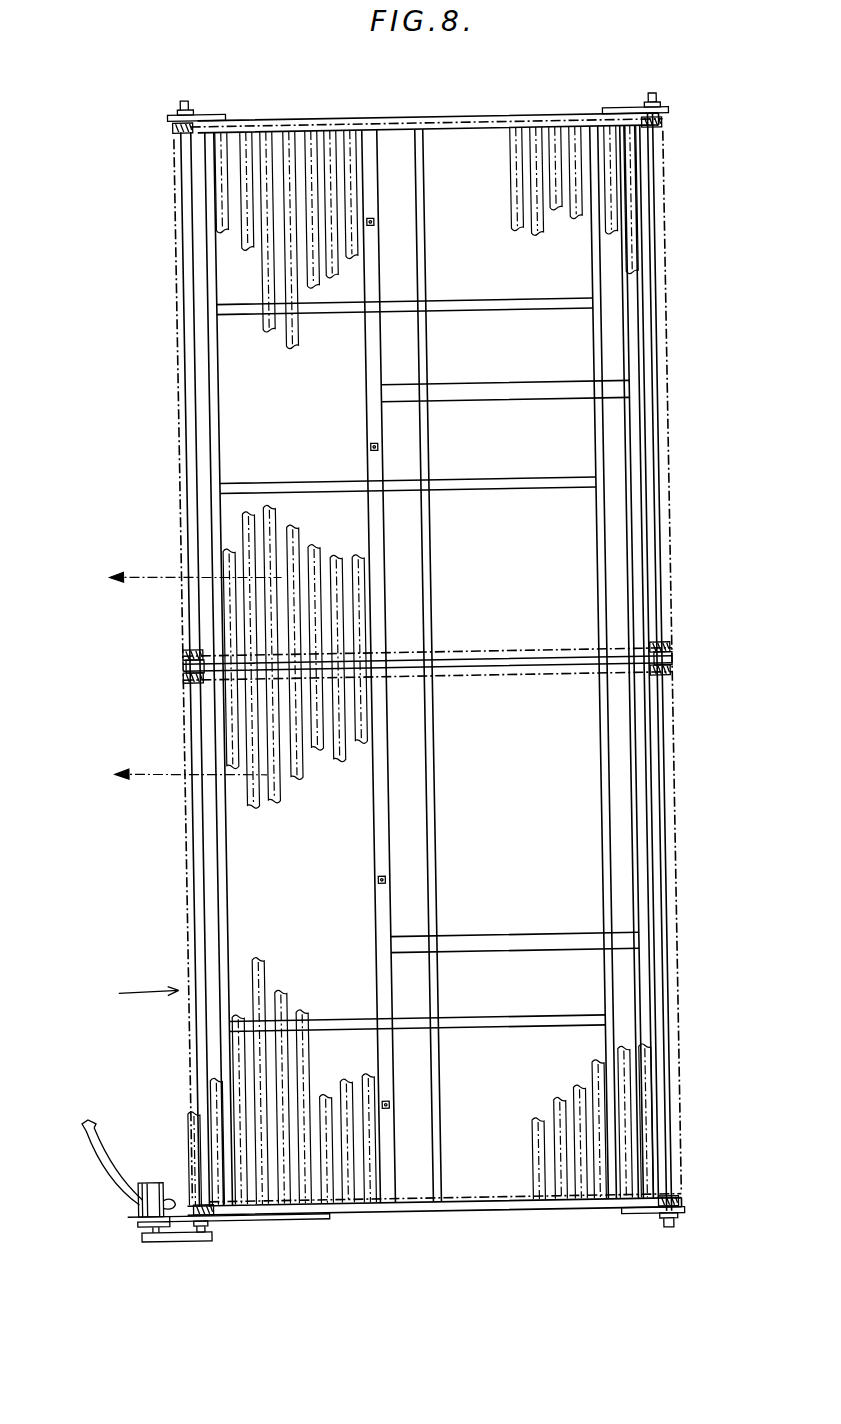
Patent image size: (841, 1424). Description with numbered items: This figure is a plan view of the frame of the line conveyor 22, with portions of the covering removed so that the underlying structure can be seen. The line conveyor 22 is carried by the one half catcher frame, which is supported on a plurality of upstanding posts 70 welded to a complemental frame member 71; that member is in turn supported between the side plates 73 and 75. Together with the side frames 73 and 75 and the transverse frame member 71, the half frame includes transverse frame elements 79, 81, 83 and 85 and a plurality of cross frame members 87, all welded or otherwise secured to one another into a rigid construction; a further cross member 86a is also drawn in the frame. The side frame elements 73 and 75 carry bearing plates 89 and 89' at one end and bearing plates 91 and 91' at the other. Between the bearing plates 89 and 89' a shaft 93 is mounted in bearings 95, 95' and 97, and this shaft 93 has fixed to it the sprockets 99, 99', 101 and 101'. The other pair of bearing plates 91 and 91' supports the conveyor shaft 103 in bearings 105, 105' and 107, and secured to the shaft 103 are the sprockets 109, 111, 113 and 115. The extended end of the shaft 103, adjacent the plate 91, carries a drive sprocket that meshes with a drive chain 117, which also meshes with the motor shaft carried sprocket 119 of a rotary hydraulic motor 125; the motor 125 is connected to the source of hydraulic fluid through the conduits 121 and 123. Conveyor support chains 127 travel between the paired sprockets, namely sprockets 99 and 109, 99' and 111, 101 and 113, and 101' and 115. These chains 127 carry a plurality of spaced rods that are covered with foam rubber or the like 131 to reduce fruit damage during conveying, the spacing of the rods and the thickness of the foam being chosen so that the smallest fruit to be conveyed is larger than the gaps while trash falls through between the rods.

The line conveyor 22 is at (134, 992).
The upstanding posts 70 is at (384, 222).
The complemental frame member 71 is at (373, 339).
The side plate 73 is at (470, 1212).
The side plate 75 is at (499, 118).
The transverse frame element 79 is at (228, 362).
The transverse frame element 81 is at (432, 448).
The transverse frame element 83 is at (601, 343).
The transverse frame element 85 is at (644, 491).
The cross member 86a is at (519, 385).
The cross frame members 87 is at (476, 301).
The bearing plate 89 is at (648, 1230).
The bearing plate 89' is at (628, 89).
The bearing plate 91 is at (250, 1229).
The bearing plate 91' is at (209, 96).
The shaft 93 is at (670, 404).
The bearing 95 is at (694, 1225).
The bearing 95' is at (687, 93).
The bearing 97 is at (672, 667).
The sprocket 99 is at (698, 1177).
The sprocket 99' is at (691, 684).
The sprocket 101 is at (693, 637).
The sprocket 101' is at (694, 130).
The conveyor shaft 103 is at (192, 421).
The bearing 105 is at (221, 1251).
The bearing 105' is at (141, 97).
The bearing 107 is at (190, 660).
The sprocket 109 is at (210, 1208).
The sprocket 111 is at (183, 674).
The sprocket 113 is at (183, 650).
The sprocket 115 is at (182, 124).
The drive chain 117 is at (165, 1237).
The motor shaft carried sprocket 119 is at (140, 1222).
The conduit 121 is at (86, 1157).
The conduit 123 is at (151, 1195).
The rotary hydraulic motor 125 is at (131, 1175).
The conveyor support chains 127 is at (446, 135).
The foam rubber covering 131 is at (299, 352).